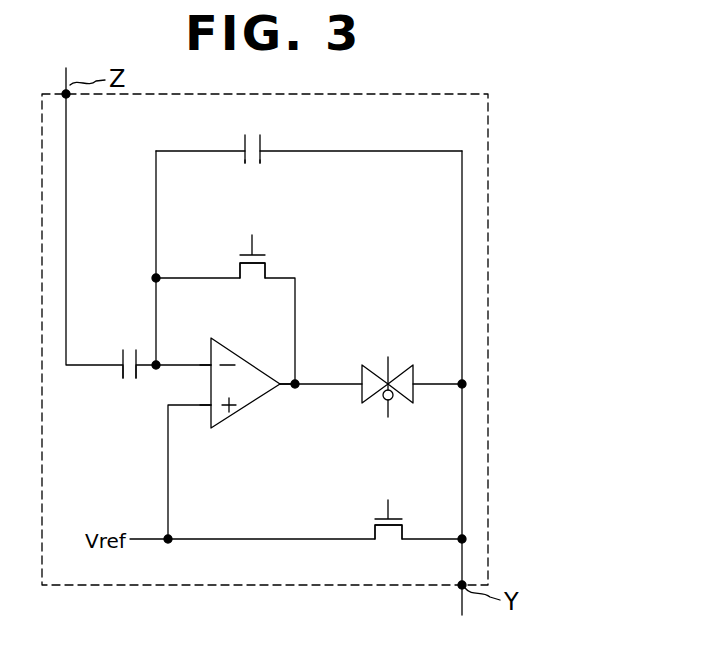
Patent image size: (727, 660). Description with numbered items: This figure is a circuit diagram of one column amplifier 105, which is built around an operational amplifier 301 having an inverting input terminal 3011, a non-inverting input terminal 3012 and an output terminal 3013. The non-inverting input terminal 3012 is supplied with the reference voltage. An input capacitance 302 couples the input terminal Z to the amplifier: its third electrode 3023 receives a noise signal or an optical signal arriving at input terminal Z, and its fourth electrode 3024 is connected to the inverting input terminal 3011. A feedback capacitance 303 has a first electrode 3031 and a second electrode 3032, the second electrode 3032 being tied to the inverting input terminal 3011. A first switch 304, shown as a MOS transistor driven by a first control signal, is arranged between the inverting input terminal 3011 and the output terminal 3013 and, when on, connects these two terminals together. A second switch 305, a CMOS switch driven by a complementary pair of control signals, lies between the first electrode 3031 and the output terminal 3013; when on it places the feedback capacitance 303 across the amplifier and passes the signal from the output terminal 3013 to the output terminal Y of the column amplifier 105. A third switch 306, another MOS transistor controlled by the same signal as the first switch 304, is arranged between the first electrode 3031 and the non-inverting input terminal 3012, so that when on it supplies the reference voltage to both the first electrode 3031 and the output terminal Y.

The column amplifier 105 is at (490, 130).
The operational amplifier 301 is at (268, 344).
The inverting input terminal 3011 is at (208, 361).
The non-inverting input terminal 3012 is at (209, 410).
The output terminal 3013 is at (283, 390).
The input capacitance 302 is at (125, 347).
The third electrode 3023 is at (118, 374).
The fourth electrode 3024 is at (138, 383).
The feedback capacitance 303 is at (251, 133).
The first electrode 3031 is at (262, 164).
The second electrode 3032 is at (243, 164).
The first switch 304 is at (266, 258).
The second switch 305 is at (413, 366).
The third switch 306 is at (404, 520).